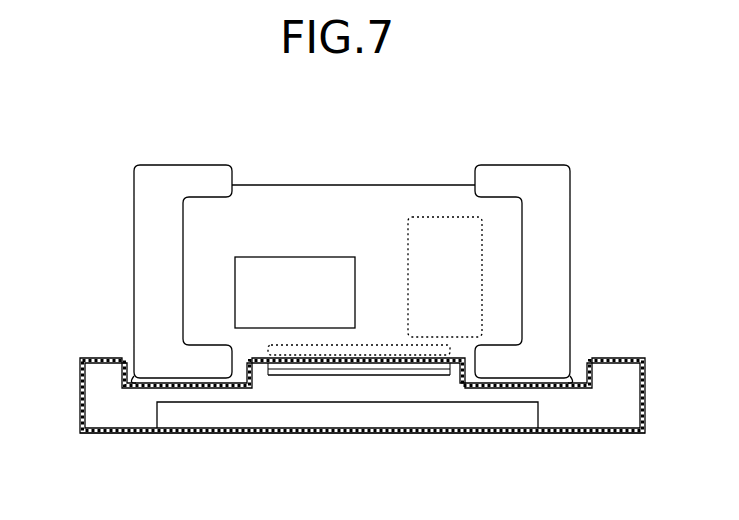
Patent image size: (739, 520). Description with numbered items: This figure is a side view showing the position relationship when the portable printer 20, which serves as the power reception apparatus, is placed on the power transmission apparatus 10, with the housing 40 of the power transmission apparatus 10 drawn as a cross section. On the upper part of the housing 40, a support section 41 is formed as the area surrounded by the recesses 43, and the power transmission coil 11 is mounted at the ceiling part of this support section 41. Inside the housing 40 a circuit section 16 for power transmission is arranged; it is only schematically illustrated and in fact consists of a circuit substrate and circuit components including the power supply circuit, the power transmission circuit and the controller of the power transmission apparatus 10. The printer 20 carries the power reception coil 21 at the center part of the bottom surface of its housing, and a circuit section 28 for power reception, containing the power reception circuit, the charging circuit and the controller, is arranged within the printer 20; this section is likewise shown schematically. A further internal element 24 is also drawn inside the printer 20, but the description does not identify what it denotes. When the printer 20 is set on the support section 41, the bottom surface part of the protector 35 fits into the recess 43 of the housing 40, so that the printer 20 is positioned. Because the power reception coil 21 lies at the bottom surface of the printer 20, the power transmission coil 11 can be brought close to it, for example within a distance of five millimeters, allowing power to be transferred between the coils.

The power transmission apparatus 10 is at (296, 434).
The power transmission coil 11 is at (353, 376).
The circuit section for power transmission 16 is at (455, 412).
The printer 20 is at (352, 180).
The power reception coil 21 is at (376, 342).
The light emitting region 24 is at (280, 267).
The circuit section for power reception 28 is at (448, 215).
The protector 35 is at (134, 240).
The housing 40 is at (80, 398).
The support section 41 is at (410, 376).
The recess 43 is at (130, 388).